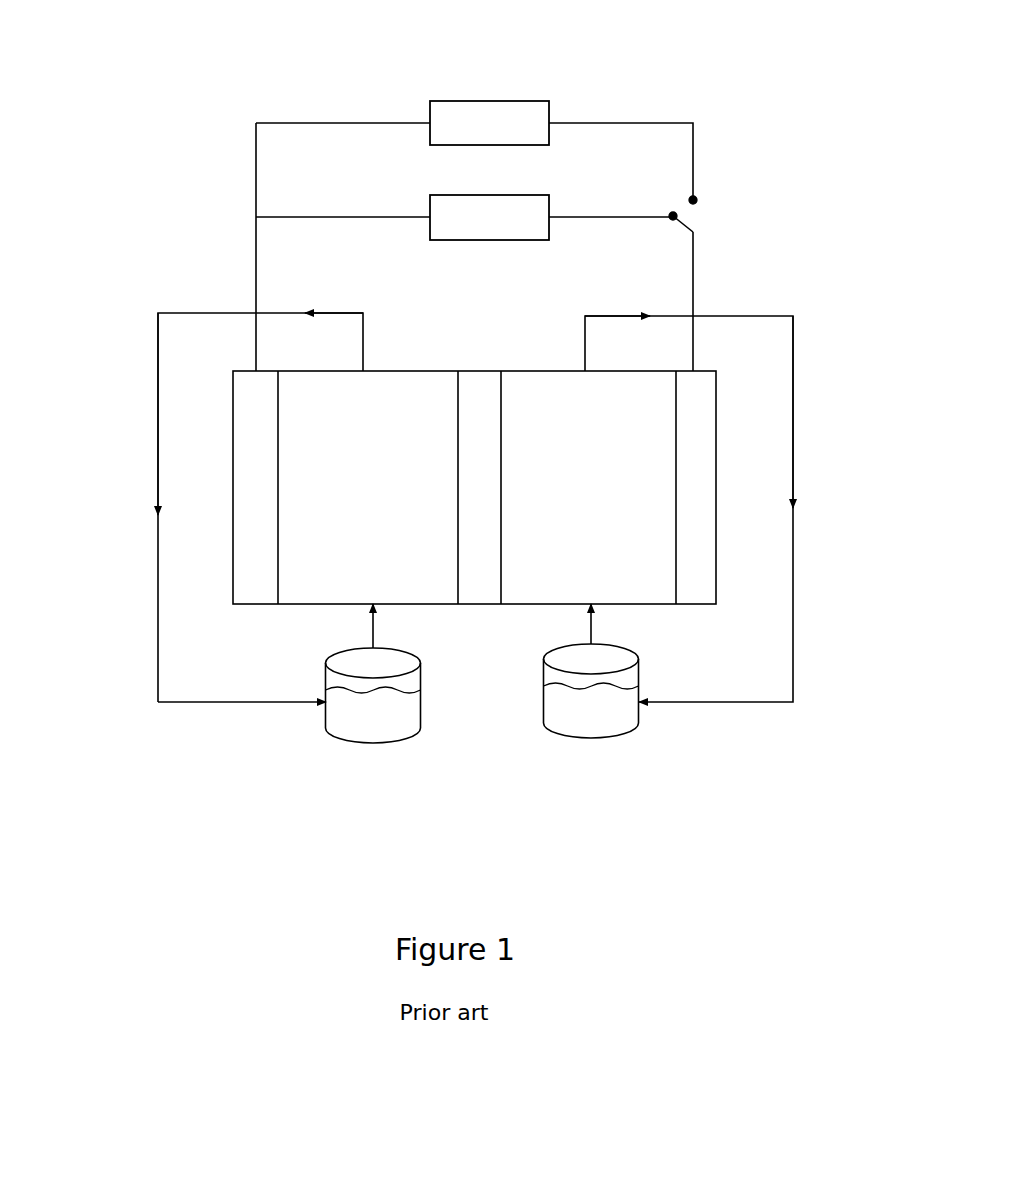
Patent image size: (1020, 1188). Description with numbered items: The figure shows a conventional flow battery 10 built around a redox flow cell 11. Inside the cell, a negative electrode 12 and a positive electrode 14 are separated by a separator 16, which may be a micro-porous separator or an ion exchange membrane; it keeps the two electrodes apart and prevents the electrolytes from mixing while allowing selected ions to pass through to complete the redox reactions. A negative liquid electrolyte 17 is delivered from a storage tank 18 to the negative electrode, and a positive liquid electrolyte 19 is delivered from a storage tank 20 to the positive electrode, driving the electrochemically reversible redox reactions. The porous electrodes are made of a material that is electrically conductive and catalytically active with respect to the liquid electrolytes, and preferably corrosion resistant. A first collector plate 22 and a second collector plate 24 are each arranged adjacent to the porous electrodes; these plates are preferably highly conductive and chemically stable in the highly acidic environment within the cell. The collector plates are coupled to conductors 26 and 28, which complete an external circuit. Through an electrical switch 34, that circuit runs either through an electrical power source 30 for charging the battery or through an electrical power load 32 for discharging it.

The flow battery 10 is at (160, 728).
The redox flow cell 11 is at (648, 604).
The negative electrode 12 is at (308, 460).
The positive electrode 14 is at (627, 467).
The separator 16 is at (482, 563).
The negative liquid electrolyte 17 is at (351, 713).
The storage tank 18 is at (392, 742).
The positive liquid electrolyte 19 is at (600, 713).
The storage tank 20 is at (568, 733).
The first collector plate 22 is at (248, 560).
The second collector plate 24 is at (690, 553).
The conductor 26 is at (256, 262).
The conductor 28 is at (693, 276).
The electrical power source 30 is at (490, 100).
The electrical power load 32 is at (430, 205).
The electrical switch 34 is at (691, 226).